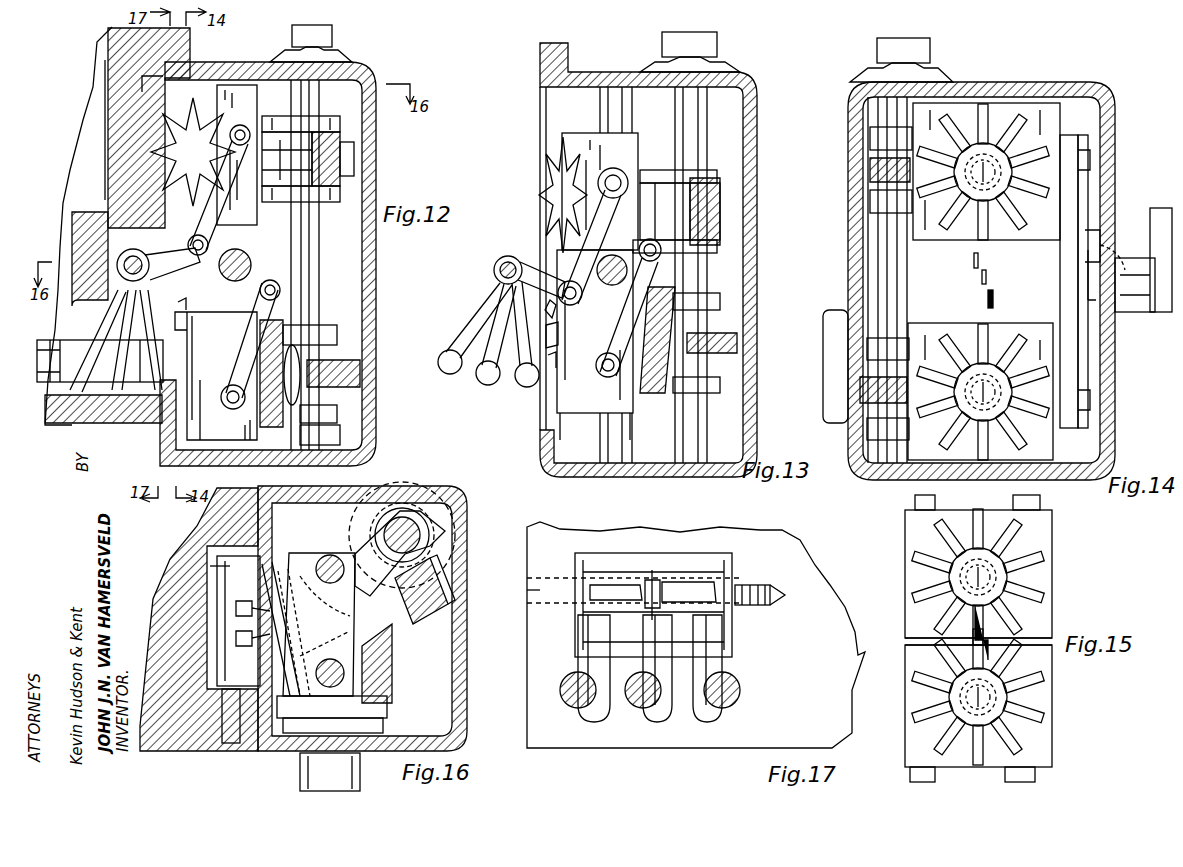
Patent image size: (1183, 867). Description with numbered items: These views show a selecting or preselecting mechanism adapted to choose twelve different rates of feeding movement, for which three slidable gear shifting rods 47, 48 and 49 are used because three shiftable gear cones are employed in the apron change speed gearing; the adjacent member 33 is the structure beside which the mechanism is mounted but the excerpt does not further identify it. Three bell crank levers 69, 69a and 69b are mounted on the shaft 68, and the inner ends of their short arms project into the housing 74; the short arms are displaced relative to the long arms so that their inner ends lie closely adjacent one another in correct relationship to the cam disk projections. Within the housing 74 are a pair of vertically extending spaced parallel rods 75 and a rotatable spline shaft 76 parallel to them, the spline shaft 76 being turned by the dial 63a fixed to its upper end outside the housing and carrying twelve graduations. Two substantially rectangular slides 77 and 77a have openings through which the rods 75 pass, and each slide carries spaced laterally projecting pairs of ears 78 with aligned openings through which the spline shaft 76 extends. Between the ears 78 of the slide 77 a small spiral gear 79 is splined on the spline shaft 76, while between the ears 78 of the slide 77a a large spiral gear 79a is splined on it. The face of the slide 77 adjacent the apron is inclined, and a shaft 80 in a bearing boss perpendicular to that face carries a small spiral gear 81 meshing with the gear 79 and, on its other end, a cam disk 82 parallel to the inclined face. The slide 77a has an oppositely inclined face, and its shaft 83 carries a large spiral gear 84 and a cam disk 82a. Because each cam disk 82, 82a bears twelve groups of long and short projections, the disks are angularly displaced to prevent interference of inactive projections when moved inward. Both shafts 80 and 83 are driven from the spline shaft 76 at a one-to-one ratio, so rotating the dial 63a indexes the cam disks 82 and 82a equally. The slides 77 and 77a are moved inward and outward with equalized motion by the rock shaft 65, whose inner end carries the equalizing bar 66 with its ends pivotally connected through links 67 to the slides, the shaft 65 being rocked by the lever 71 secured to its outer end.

In FIG. 12, the panel 33 is at (117, 226).
In FIG. 16, the panel 33 is at (199, 619).
In FIG. 17, the panel 33 is at (696, 625).
In FIG. 12, the shifting rod 47 is at (103, 378).
In FIG. 17, the shifting rod 47 is at (722, 722).
In FIG. 12, the shifting rod 48 is at (124, 378).
In FIG. 17, the shifting rod 48 is at (643, 722).
In FIG. 12, the shifting rod 49 is at (98, 378).
In FIG. 17, the shifting rod 49 is at (578, 724).
In FIG. 12, the dial 63a is at (332, 43).
In FIG. 13, the dial 63a is at (706, 52).
In FIG. 14, the dial 63a is at (915, 60).
In FIG. 12, the shaft 65 is at (234, 267).
In FIG. 13, the shaft 65 is at (593, 249).
In FIG. 14, the shaft 65 is at (1117, 288).
In FIG. 13, the equalizing bar 66 is at (622, 308).
In FIG. 14, the equalizing bar 66 is at (1114, 307).
In FIG. 13, the link 67 is at (612, 305).
In FIG. 14, the link 67 is at (1104, 281).
In FIG. 12, the shaft 68 is at (118, 277).
In FIG. 13, the shaft 68 is at (505, 299).
In FIG. 16, the shaft 68 is at (239, 733).
In FIG. 17, the shaft 68 is at (662, 599).
In FIG. 12, the bell crank lever 69 is at (139, 423).
In FIG. 13, the bell crank lever 69 is at (506, 390).
In FIG. 14, the bell crank lever 69 is at (965, 256).
In FIG. 16, the bell crank lever 69 is at (200, 612).
In FIG. 17, the bell crank lever 69 is at (694, 611).
In FIG. 12, the bell crank lever 69a is at (114, 426).
In FIG. 13, the bell crank lever 69a is at (476, 382).
In FIG. 14, the bell crank lever 69a is at (1001, 263).
In FIG. 16, the bell crank lever 69a is at (206, 620).
In FIG. 17, the bell crank lever 69a is at (657, 610).
In FIG. 12, the bell crank lever 69b is at (63, 422).
In FIG. 13, the bell crank lever 69b is at (450, 336).
In FIG. 14, the bell crank lever 69b is at (974, 299).
In FIG. 16, the bell crank lever 69b is at (211, 665).
In FIG. 17, the bell crank lever 69b is at (610, 610).
In FIG. 14, the lever 71 is at (1143, 244).
In FIG. 12, the housing 74 is at (287, 264).
In FIG. 13, the housing 74 is at (663, 260).
In FIG. 14, the housing 74 is at (986, 281).
In FIG. 16, the housing 74 is at (376, 638).
In FIG. 12, the rod 75 is at (329, 284).
In FIG. 13, the rod 75 is at (631, 275).
In FIG. 14, the rod 75 is at (973, 280).
In FIG. 15, the rod 75 is at (977, 642).
In FIG. 16, the rod 75 is at (311, 625).
In FIG. 12, the spline shaft 76 is at (346, 265).
In FIG. 13, the spline shaft 76 is at (729, 275).
In FIG. 14, the spline shaft 76 is at (843, 280).
In FIG. 16, the spline shaft 76 is at (428, 549).
In FIG. 12, the slide 77 is at (237, 130).
In FIG. 13, the slide 77 is at (600, 177).
In FIG. 14, the slide 77 is at (991, 152).
In FIG. 15, the slide 77 is at (997, 574).
In FIG. 16, the slide 77 is at (338, 664).
In FIG. 12, the slide 77a is at (273, 452).
In FIG. 13, the slide 77a is at (595, 425).
In FIG. 14, the slide 77a is at (1002, 414).
In FIG. 15, the slide 77a is at (1001, 706).
In FIG. 12, the ear 78 is at (334, 271).
In FIG. 13, the ear 78 is at (676, 281).
In FIG. 14, the ear 78 is at (889, 283).
In FIG. 12, the small spiral gear 79 is at (334, 159).
In FIG. 14, the small spiral gear 79 is at (858, 170).
In FIG. 16, the small spiral gear 79 is at (413, 529).
In FIG. 12, the large spiral gear 79a is at (341, 373).
In FIG. 13, the large spiral gear 79a is at (715, 340).
In FIG. 14, the large spiral gear 79a is at (851, 392).
In FIG. 15, the shaft 80 is at (1031, 620).
In FIG. 16, the shaft 80 is at (332, 584).
In FIG. 12, the small spiral gear 81 is at (376, 165).
In FIG. 13, the small spiral gear 81 is at (712, 211).
In FIG. 16, the small spiral gear 81 is at (425, 606).
In FIG. 12, the cam disk 82 is at (146, 152).
In FIG. 13, the cam disk 82 is at (543, 195).
In FIG. 14, the cam disk 82 is at (1002, 172).
In FIG. 15, the cam disk 82 is at (999, 577).
In FIG. 16, the cam disk 82 is at (281, 607).
In FIG. 12, the cam disk 82a is at (216, 369).
In FIG. 13, the cam disk 82a is at (533, 359).
In FIG. 14, the cam disk 82a is at (1002, 392).
In FIG. 15, the cam disk 82a is at (1004, 697).
In FIG. 16, the cam disk 82a is at (306, 607).
In FIG. 15, the shaft 83 is at (1042, 684).
In FIG. 16, the shaft 83 is at (333, 657).
In FIG. 12, the large spiral gear 84 is at (352, 435).
In FIG. 13, the large spiral gear 84 is at (734, 360).
In FIG. 16, the large spiral gear 84 is at (349, 678).